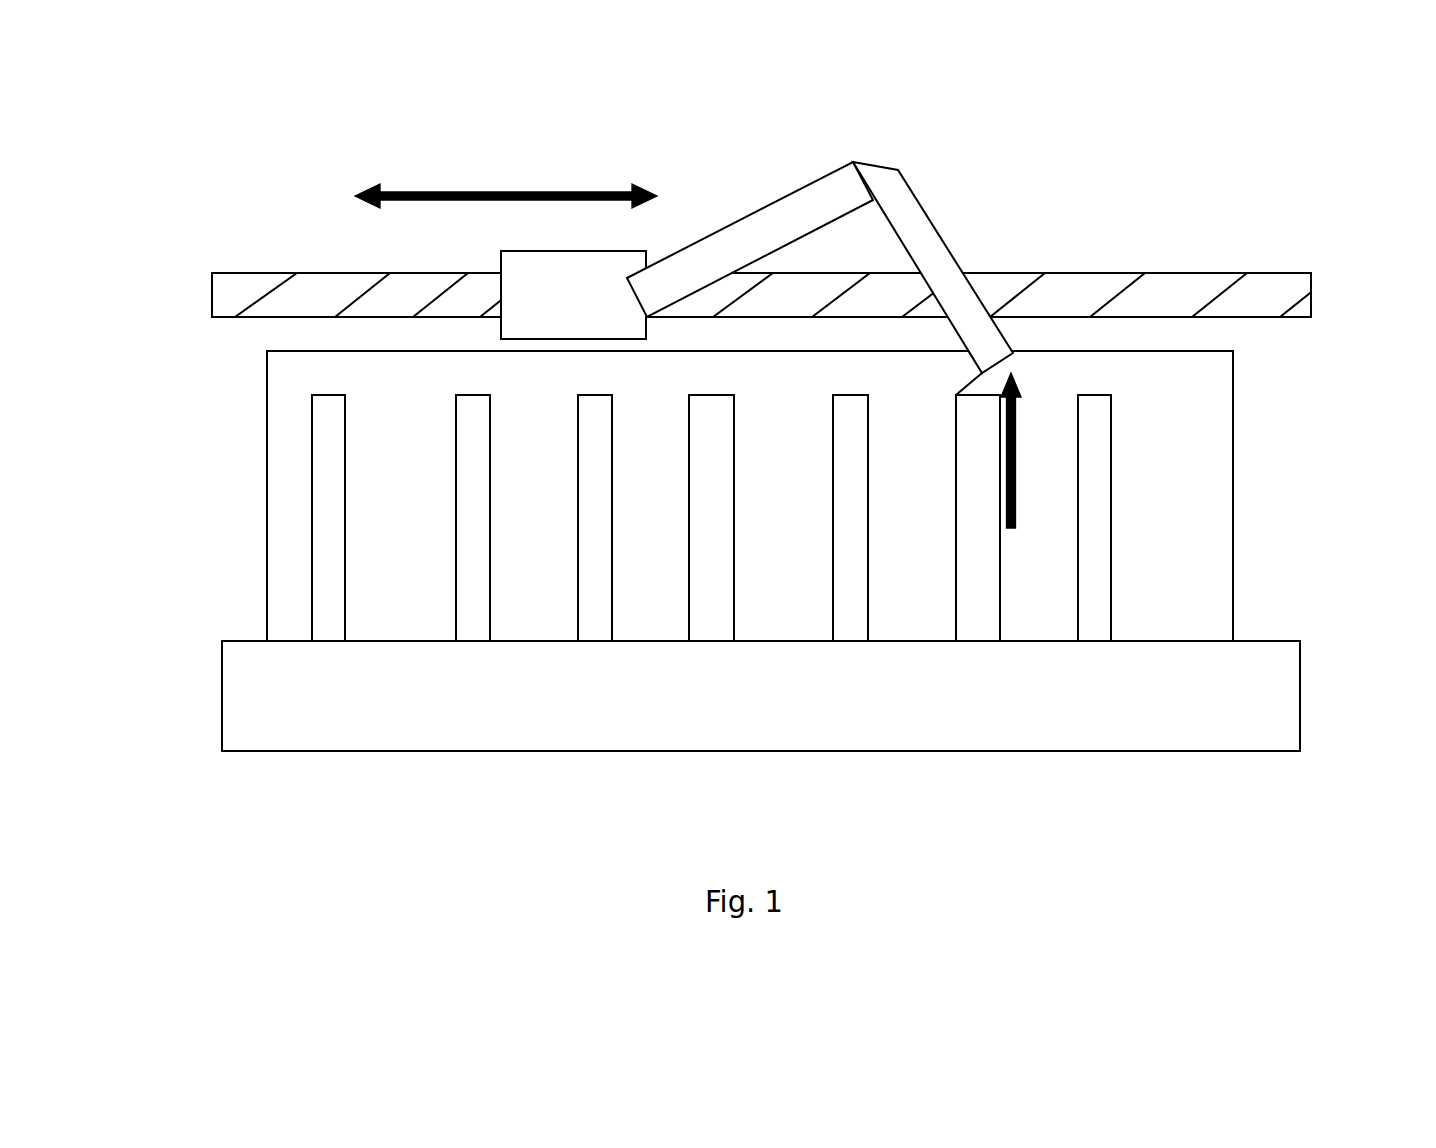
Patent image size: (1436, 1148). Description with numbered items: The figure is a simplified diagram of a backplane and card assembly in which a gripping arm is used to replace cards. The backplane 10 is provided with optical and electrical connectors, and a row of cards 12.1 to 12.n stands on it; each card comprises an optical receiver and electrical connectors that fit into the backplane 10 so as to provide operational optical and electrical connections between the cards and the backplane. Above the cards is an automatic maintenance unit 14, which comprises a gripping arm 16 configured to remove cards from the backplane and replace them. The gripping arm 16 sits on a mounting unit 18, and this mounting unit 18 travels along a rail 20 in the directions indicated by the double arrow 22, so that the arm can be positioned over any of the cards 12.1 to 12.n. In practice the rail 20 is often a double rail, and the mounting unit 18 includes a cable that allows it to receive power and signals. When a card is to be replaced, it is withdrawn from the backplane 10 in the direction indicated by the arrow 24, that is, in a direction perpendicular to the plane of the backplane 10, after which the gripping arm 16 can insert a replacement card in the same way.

The backplane 10 is at (1255, 707).
The card 12.1 is at (323, 485).
The card 12.n is at (1088, 495).
The automatic maintenance unit 14 is at (876, 239).
The gripping arm 16 is at (877, 162).
The mounting unit 18 is at (635, 250).
The rail 20 is at (300, 297).
The double arrow 22 is at (533, 192).
The arrow 24 is at (1013, 407).